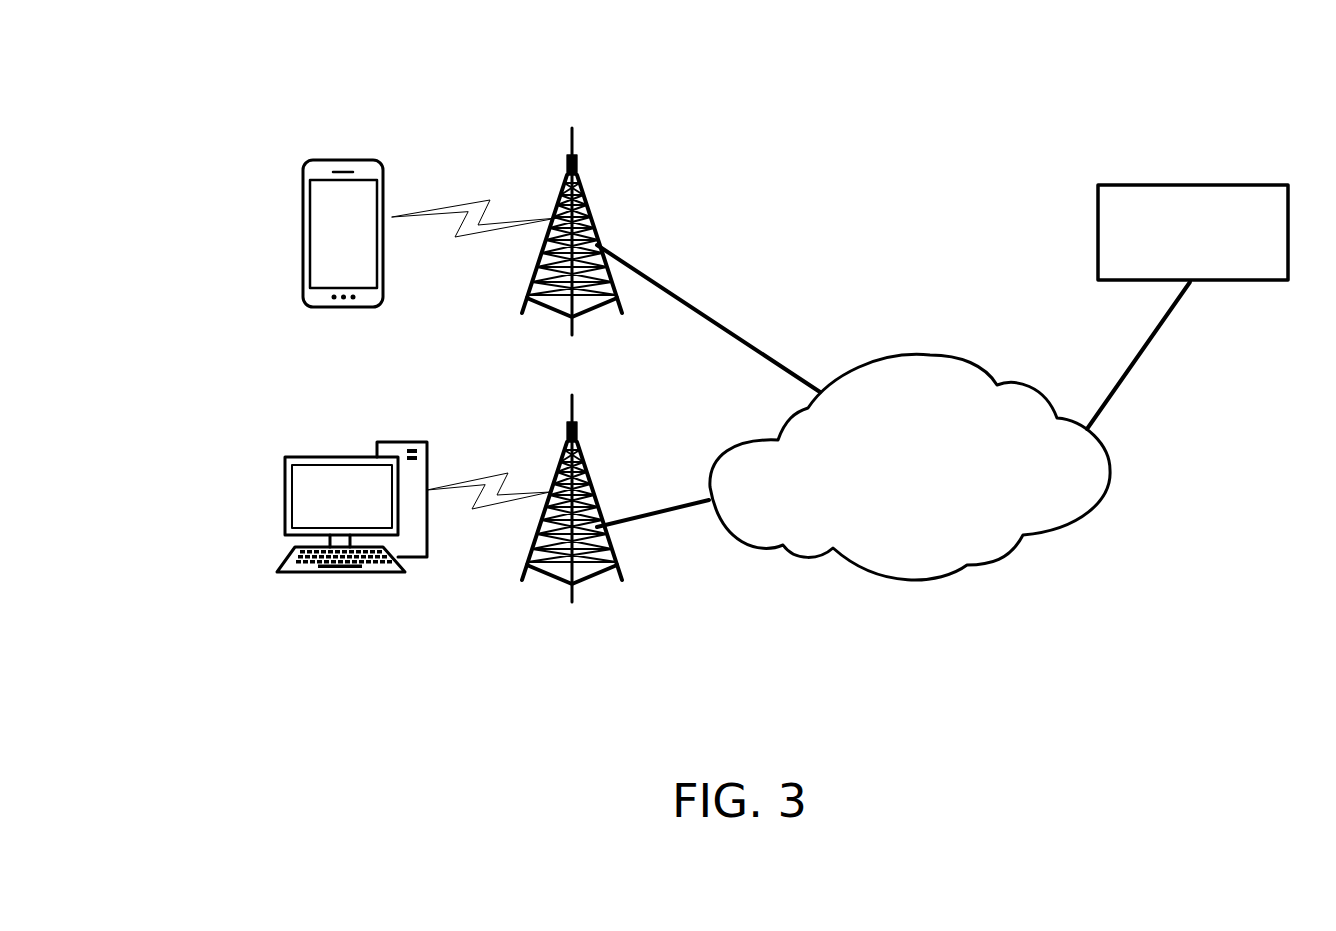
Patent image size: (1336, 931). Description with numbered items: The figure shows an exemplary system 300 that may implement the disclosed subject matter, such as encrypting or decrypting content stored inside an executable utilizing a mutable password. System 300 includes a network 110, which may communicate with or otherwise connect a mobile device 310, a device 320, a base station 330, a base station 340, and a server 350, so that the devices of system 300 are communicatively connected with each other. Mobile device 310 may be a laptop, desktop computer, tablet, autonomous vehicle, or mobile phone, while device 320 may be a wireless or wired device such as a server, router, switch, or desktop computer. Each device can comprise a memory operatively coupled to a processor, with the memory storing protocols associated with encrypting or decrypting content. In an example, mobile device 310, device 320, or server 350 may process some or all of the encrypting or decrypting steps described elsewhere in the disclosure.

The system 300 is at (381, 84).
The mobile device 310 is at (303, 226).
The device 320 is at (285, 498).
The base station 330 is at (582, 190).
The base station 340 is at (582, 458).
The network 110 is at (910, 467).
The server 350 is at (1193, 232).